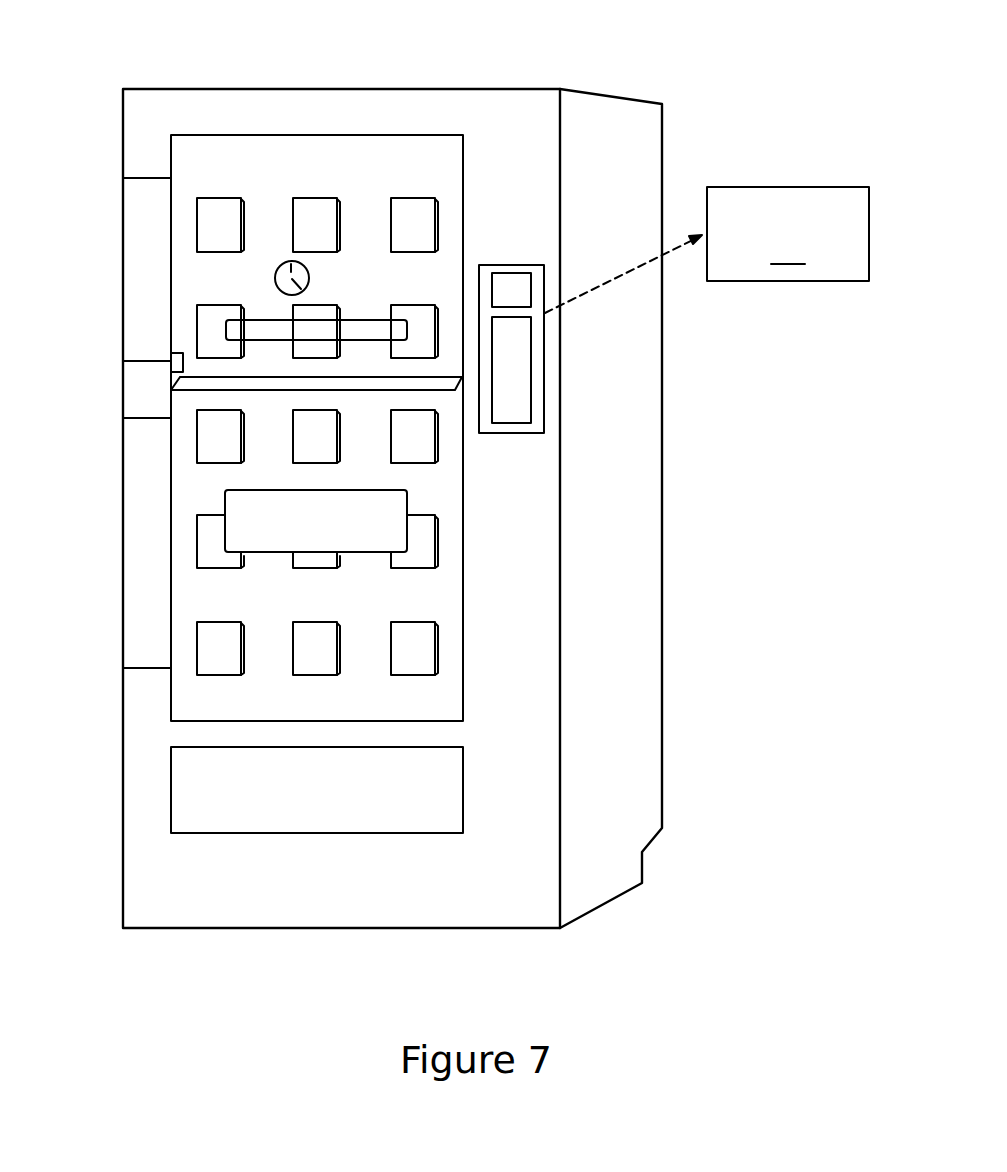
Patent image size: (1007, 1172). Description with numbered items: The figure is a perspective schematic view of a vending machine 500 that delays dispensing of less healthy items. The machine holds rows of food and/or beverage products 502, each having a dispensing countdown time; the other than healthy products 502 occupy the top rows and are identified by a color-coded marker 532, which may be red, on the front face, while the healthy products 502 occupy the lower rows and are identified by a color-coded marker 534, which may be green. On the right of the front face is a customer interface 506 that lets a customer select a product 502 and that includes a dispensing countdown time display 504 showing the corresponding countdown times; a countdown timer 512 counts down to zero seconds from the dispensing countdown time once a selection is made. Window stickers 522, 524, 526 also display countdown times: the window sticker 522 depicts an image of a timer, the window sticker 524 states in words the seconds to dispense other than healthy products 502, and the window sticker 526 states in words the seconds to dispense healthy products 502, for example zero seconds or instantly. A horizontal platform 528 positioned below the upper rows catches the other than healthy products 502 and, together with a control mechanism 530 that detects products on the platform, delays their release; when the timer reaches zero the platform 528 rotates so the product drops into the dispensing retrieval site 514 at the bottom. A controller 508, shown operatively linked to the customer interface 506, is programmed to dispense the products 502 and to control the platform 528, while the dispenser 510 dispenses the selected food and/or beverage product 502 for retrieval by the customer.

The vending machine 500 is at (150, 66).
The food and/or beverage product 502 is at (391, 222).
The dispensing countdown time display 504 is at (512, 423).
The customer interface 506 is at (532, 243).
The controller 508 is at (707, 250).
The dispenser 510 is at (514, 549).
The countdown timer 512 is at (507, 273).
The dispensing retrieval site 514 is at (412, 852).
The window sticker 522 is at (275, 278).
The window sticker 524 is at (226, 330).
The window sticker 526 is at (225, 503).
The horizontal platform 528 is at (207, 390).
The control mechanism 530 is at (171, 364).
The color-coded marker 532 is at (146, 224).
The color-coded marker 534 is at (148, 613).